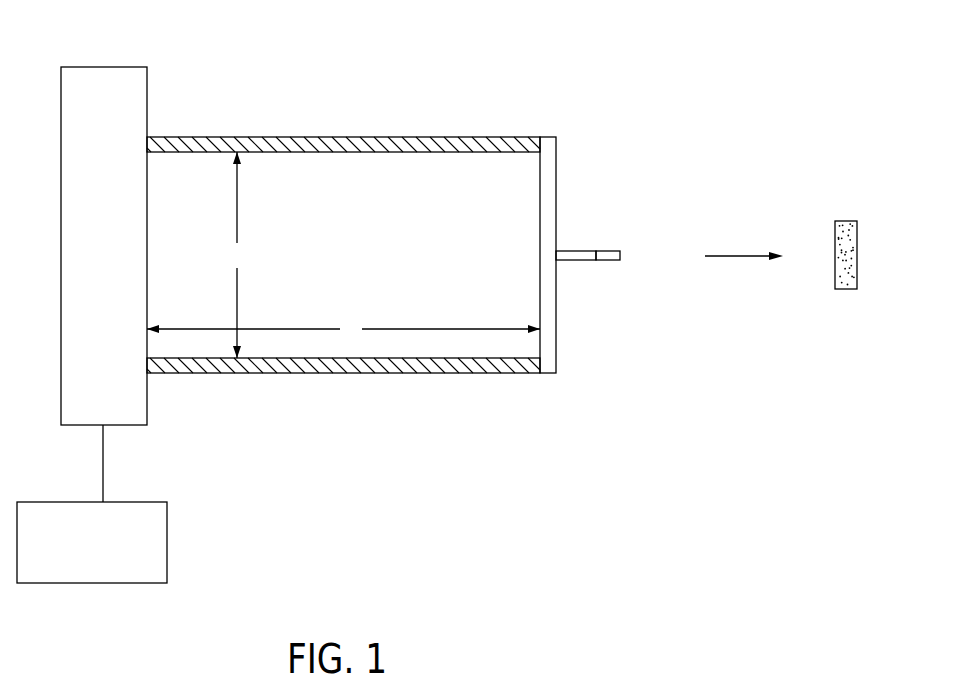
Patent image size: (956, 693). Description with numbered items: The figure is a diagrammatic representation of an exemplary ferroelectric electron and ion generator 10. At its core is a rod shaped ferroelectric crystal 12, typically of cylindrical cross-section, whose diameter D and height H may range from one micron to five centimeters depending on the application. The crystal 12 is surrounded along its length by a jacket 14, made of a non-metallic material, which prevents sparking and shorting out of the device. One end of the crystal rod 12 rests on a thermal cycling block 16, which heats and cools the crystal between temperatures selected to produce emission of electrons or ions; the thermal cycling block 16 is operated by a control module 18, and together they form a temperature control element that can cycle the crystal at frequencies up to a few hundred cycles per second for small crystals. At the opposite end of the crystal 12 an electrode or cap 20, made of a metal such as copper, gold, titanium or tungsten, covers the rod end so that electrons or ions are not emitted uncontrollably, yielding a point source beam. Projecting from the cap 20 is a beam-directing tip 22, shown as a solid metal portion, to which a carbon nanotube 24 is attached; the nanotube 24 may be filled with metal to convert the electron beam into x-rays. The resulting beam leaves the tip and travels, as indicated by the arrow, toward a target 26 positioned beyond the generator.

The ferroelectric electron and ion generator 10 is at (448, 66).
The rod shaped ferroelectric crystal 12 is at (467, 175).
The jacket 14 is at (216, 137).
The thermal cycling block 16 is at (103, 67).
The control module 18 is at (167, 543).
The electrode or cap 20 is at (549, 182).
The beam-directing tip 22 is at (573, 260).
The carbon nanotube 24 is at (605, 253).
The target 26 is at (847, 221).